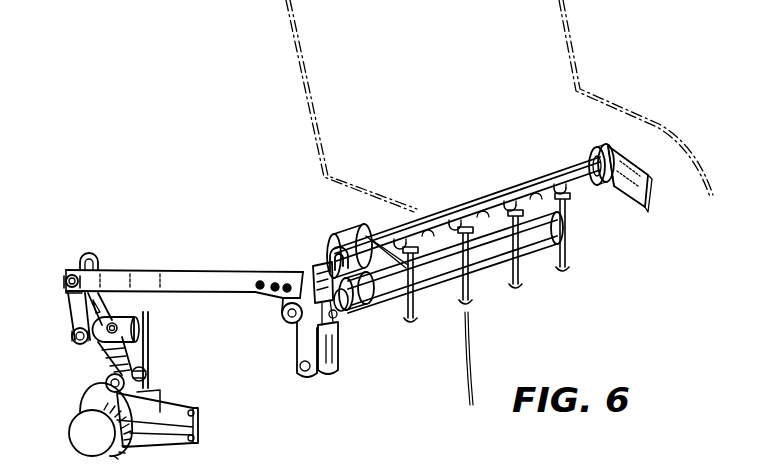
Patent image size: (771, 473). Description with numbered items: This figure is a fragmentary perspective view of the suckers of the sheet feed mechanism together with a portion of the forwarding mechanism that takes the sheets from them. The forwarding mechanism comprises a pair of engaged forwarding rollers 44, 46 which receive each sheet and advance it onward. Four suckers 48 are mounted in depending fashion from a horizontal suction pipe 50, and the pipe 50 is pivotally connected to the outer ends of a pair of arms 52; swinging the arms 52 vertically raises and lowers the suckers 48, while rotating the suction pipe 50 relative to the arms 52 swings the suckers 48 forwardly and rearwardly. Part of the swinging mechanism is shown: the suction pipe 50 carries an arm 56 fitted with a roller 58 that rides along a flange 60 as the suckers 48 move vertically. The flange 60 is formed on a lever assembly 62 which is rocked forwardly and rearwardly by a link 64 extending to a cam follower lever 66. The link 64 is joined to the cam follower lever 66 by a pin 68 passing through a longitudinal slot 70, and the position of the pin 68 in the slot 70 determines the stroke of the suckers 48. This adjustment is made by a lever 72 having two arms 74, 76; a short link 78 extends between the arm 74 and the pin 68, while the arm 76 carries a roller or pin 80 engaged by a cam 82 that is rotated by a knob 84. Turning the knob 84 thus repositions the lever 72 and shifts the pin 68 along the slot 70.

The forwarding roller 44 is at (502, 228).
The forwarding roller 46 is at (490, 270).
The suckers 48 is at (412, 309).
The suction pipe 50 is at (594, 162).
The arms 52 is at (632, 175).
The arm 56 is at (328, 253).
The roller 58 is at (370, 310).
The flange 60 is at (340, 308).
The lever assembly 62 is at (323, 267).
The link 64 is at (173, 277).
The cam follower lever 66 is at (95, 262).
The pin 68 is at (70, 292).
The longitudinal slot 70 is at (78, 263).
The lever 72 is at (159, 322).
The arm 74 is at (100, 348).
The arm 76 is at (148, 338).
The short link 78 is at (72, 313).
The roller or pin 80 is at (142, 376).
The cam 82 is at (143, 392).
The knob 84 is at (96, 442).